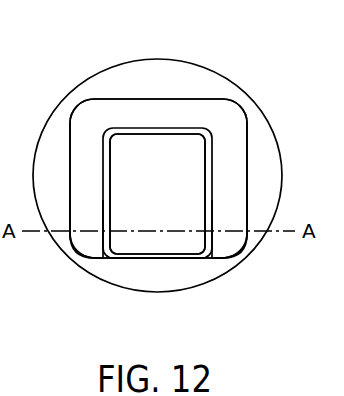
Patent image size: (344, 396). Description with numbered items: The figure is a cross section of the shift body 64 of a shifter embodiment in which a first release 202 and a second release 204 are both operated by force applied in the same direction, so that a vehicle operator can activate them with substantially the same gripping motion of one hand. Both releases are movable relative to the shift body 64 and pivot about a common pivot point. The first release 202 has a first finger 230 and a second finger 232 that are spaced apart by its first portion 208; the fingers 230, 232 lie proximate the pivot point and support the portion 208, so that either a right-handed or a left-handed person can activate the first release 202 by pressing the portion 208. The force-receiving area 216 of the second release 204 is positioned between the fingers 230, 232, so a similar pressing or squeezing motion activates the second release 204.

The shift body 64 is at (184, 69).
The first release 202 is at (211, 88).
The second release 204 is at (124, 269).
The first portion 208 is at (229, 131).
The force-receiving area 216 is at (145, 148).
The first finger 230 is at (86, 252).
The second finger 232 is at (231, 252).